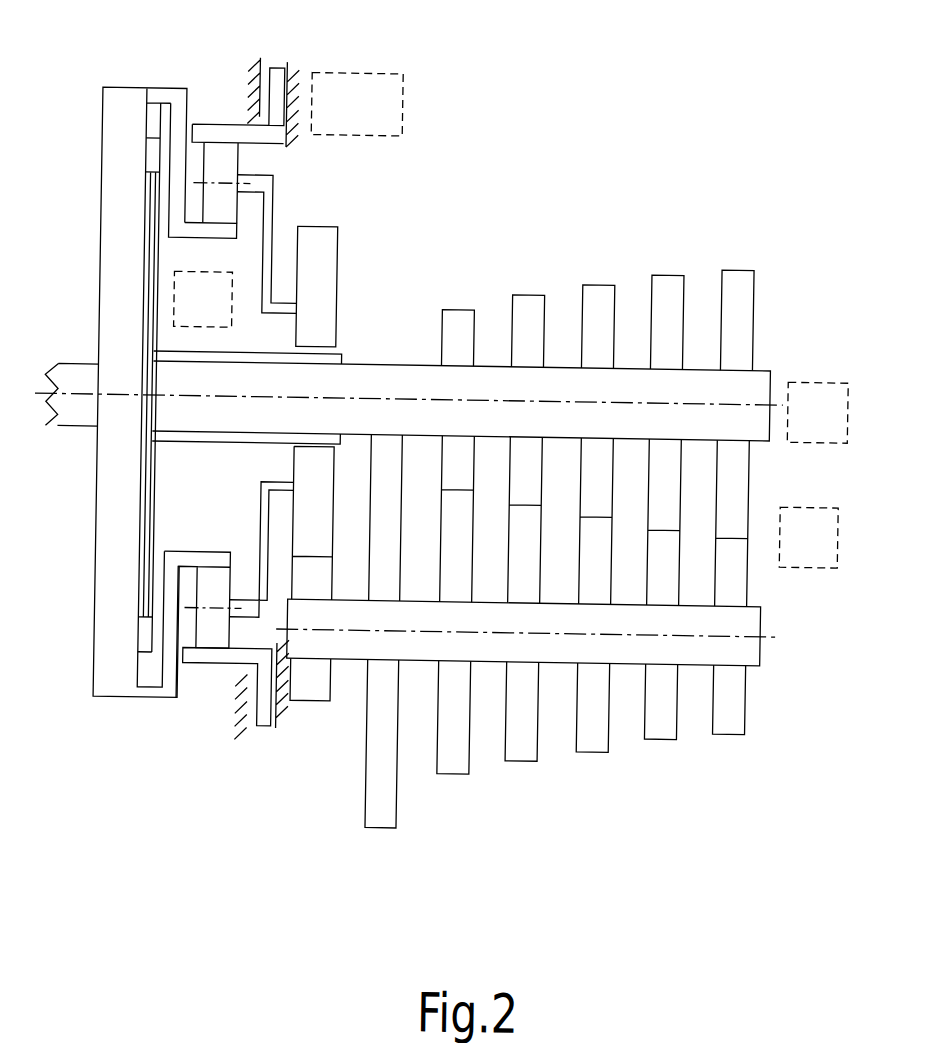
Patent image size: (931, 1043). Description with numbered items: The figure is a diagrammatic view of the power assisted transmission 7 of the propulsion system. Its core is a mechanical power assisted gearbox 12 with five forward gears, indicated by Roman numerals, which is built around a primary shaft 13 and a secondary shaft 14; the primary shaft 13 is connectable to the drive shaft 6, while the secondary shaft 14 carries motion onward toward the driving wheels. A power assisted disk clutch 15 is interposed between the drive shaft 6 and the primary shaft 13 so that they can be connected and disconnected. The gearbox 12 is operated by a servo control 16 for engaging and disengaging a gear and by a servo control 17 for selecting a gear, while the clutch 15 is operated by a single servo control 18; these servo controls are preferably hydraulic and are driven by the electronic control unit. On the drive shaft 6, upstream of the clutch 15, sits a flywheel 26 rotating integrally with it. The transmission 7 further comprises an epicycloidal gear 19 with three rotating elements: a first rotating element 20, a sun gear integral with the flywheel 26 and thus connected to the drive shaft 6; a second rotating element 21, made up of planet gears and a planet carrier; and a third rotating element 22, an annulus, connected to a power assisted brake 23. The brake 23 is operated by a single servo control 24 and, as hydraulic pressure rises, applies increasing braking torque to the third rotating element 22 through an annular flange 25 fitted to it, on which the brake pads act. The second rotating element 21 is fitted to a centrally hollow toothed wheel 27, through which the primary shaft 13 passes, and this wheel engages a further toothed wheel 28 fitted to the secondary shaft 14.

The drive shaft 6 is at (70, 419).
The power assisted transmission 7 is at (202, 831).
The mechanical power assisted gearbox 12 is at (621, 192).
The primary shaft 13 is at (757, 370).
The secondary shaft 14 is at (759, 613).
The power assisted disk clutch 15 is at (176, 505).
The servo control 16 is at (817, 412).
The servo control 17 is at (808, 537).
The servo control 18 is at (203, 299).
The epicycloidal gear 19 is at (152, 737).
The first rotating element 20 is at (176, 228).
The second rotating element 21 is at (267, 216).
The third rotating element 22 is at (215, 659).
The power assisted brake 23 is at (286, 70).
The servo control 24 is at (357, 104).
The annular flange 25 is at (270, 93).
The flywheel 26 is at (108, 292).
The toothed wheel 27 is at (325, 272).
The further toothed wheel 28 is at (309, 686).